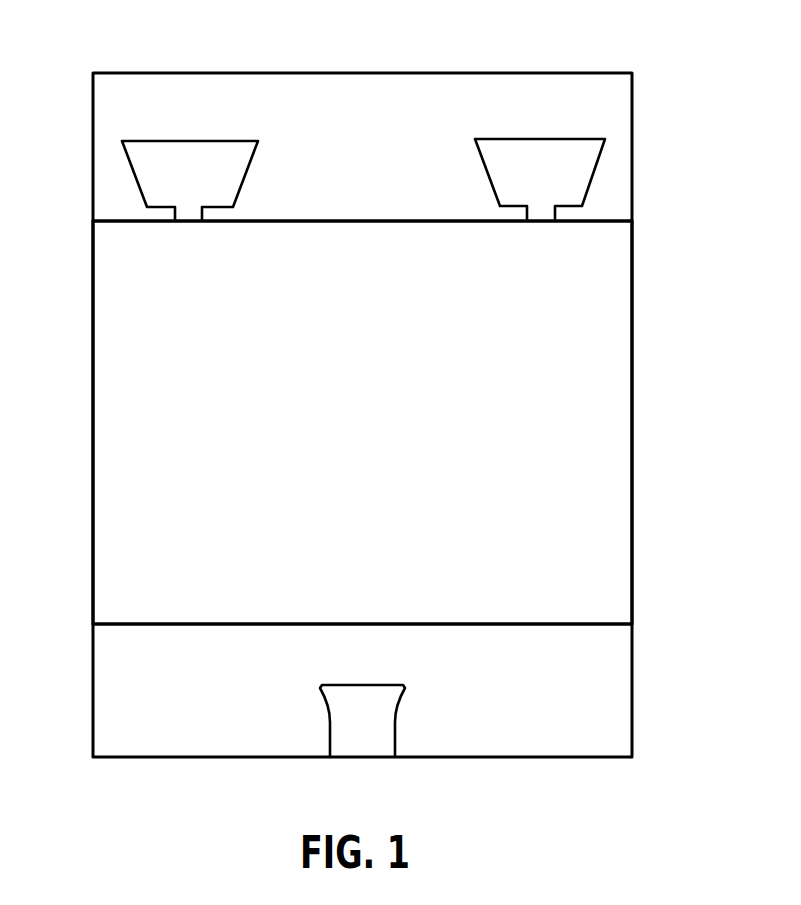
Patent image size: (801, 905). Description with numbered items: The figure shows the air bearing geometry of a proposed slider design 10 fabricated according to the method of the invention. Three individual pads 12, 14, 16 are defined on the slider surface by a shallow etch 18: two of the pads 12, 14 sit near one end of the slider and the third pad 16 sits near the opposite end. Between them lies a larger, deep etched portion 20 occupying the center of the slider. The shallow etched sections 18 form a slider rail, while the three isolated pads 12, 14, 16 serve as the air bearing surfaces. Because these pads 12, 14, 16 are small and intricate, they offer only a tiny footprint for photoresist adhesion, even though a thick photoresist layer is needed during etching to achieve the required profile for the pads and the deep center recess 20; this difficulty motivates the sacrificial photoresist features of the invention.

The slider design 10 is at (693, 320).
The individual pad 12 is at (582, 168).
The individual pad 14 is at (138, 155).
The individual pad 16 is at (382, 742).
The shallow etch 18 is at (440, 85).
The deep etched portion 20 is at (113, 388).